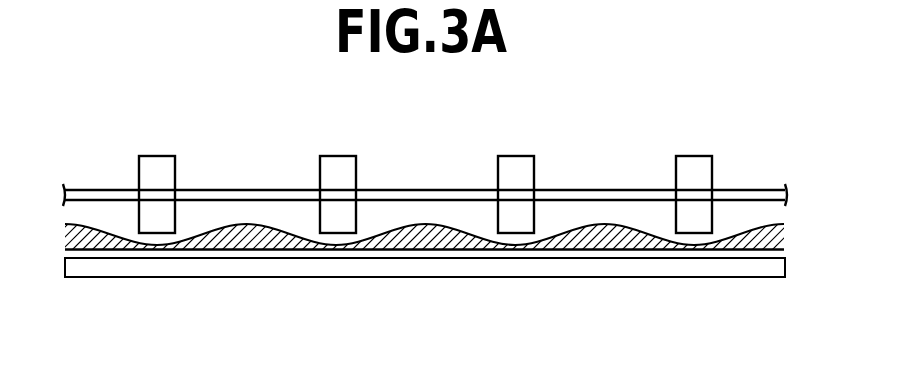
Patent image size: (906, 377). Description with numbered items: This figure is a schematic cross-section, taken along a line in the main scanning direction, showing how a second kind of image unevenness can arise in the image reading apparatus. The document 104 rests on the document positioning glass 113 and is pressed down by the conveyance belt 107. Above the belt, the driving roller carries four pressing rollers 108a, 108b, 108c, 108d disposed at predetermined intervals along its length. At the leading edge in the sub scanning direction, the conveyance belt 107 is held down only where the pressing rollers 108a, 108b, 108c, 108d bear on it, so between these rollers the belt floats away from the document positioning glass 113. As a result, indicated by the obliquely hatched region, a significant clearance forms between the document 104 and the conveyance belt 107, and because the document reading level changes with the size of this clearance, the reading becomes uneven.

The document 104 is at (728, 252).
The conveyance belt 107 is at (94, 236).
The pressing roller 108a is at (156, 156).
The pressing roller 108b is at (337, 156).
The pressing roller 108c is at (515, 156).
The pressing roller 108d is at (693, 156).
The document positioning glass 113 is at (98, 278).